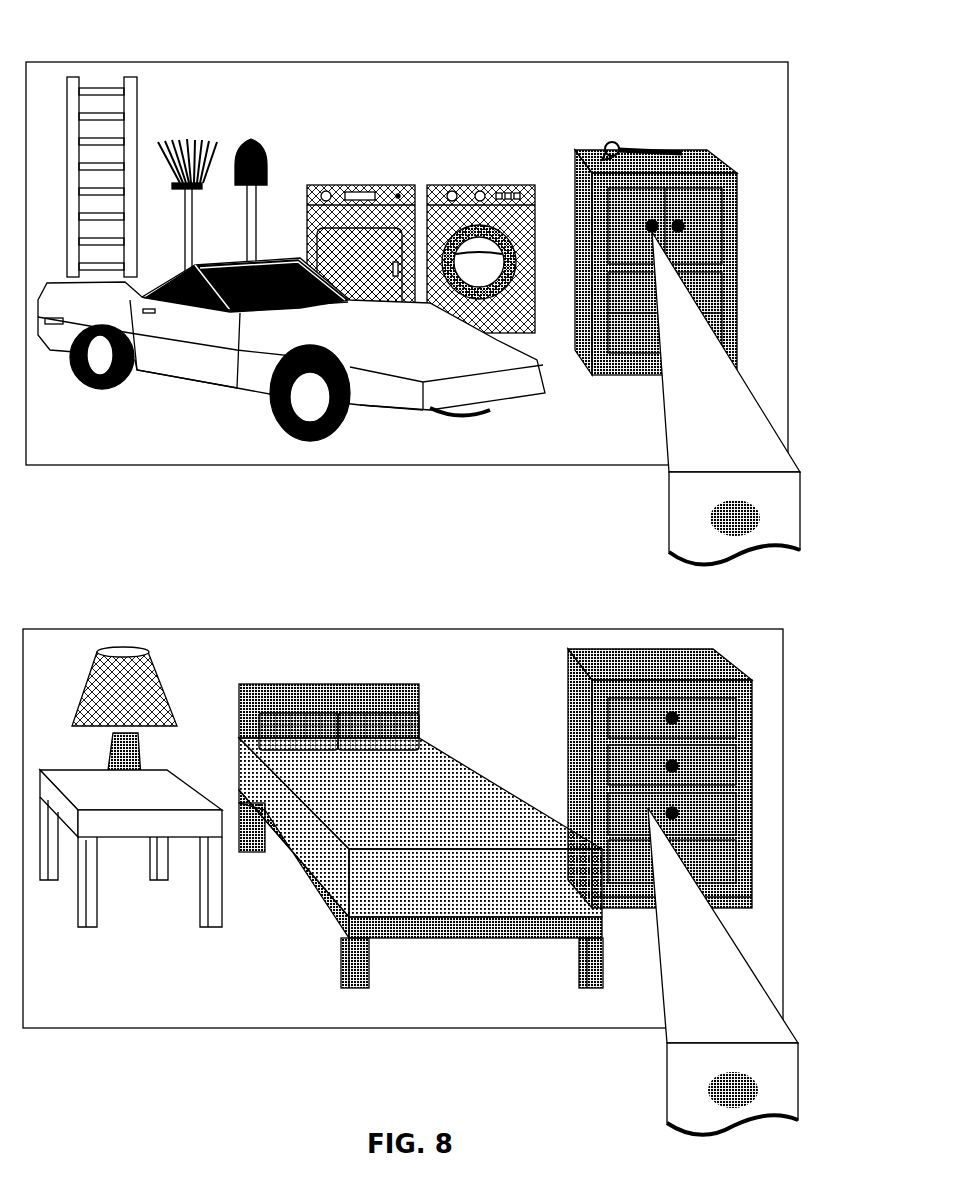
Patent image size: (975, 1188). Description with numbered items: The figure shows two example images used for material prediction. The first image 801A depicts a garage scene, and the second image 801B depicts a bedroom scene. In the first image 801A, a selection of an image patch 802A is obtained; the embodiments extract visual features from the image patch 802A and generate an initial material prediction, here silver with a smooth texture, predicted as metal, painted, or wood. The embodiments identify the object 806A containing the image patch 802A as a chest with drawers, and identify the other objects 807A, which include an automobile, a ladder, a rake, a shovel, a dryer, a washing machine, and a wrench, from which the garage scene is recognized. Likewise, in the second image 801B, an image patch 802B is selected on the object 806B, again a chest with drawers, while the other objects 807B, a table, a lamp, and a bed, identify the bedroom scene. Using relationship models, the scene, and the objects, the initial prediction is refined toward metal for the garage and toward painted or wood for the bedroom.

The first image 801A is at (106, 62).
The other objects 807A is at (138, 105).
The object 806A is at (722, 160).
The image patch 802A is at (669, 512).
The second image 801B is at (102, 629).
The other objects 807B is at (140, 650).
The object 806B is at (570, 648).
The image patch 802B is at (667, 1083).